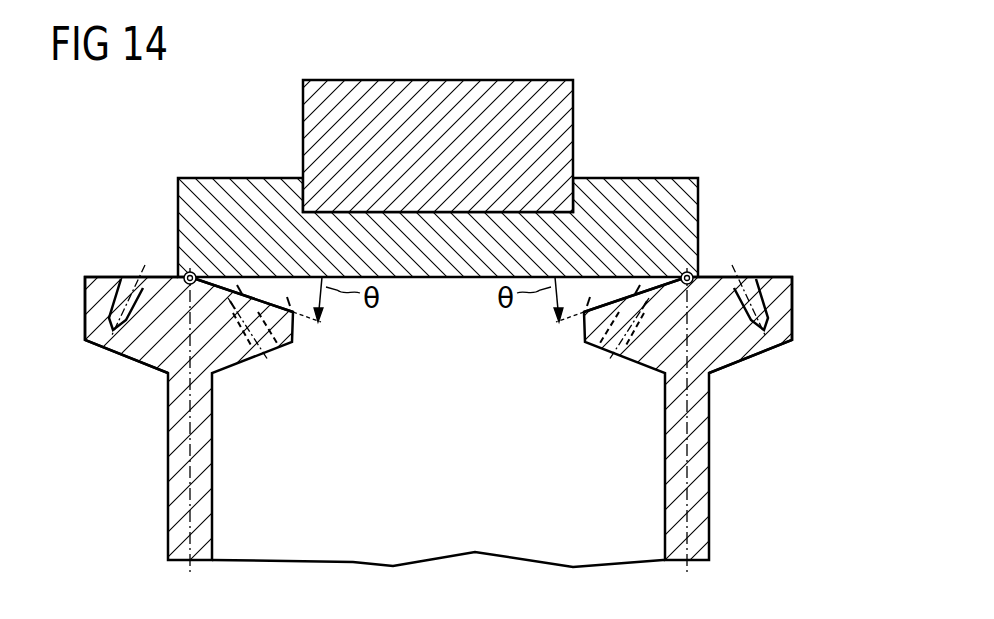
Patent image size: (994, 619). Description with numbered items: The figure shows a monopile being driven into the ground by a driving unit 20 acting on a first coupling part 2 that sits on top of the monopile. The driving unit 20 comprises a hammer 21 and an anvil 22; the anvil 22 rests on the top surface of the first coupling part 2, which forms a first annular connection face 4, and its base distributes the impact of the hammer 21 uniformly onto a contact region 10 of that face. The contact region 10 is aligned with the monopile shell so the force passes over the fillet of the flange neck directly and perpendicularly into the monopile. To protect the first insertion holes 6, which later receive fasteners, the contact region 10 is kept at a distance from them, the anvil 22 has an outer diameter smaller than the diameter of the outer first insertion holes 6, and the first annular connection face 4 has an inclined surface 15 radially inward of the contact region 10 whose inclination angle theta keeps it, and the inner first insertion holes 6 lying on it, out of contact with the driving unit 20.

The first coupling part 2 is at (110, 388).
The first annular connection face 4 is at (101, 278).
The first insertion hole 6 is at (88, 303).
The contact region 10 is at (184, 273).
The inclined surface 15 is at (298, 313).
The driving unit 20 is at (408, 177).
The hammer 21 is at (312, 123).
The anvil 22 is at (186, 193).